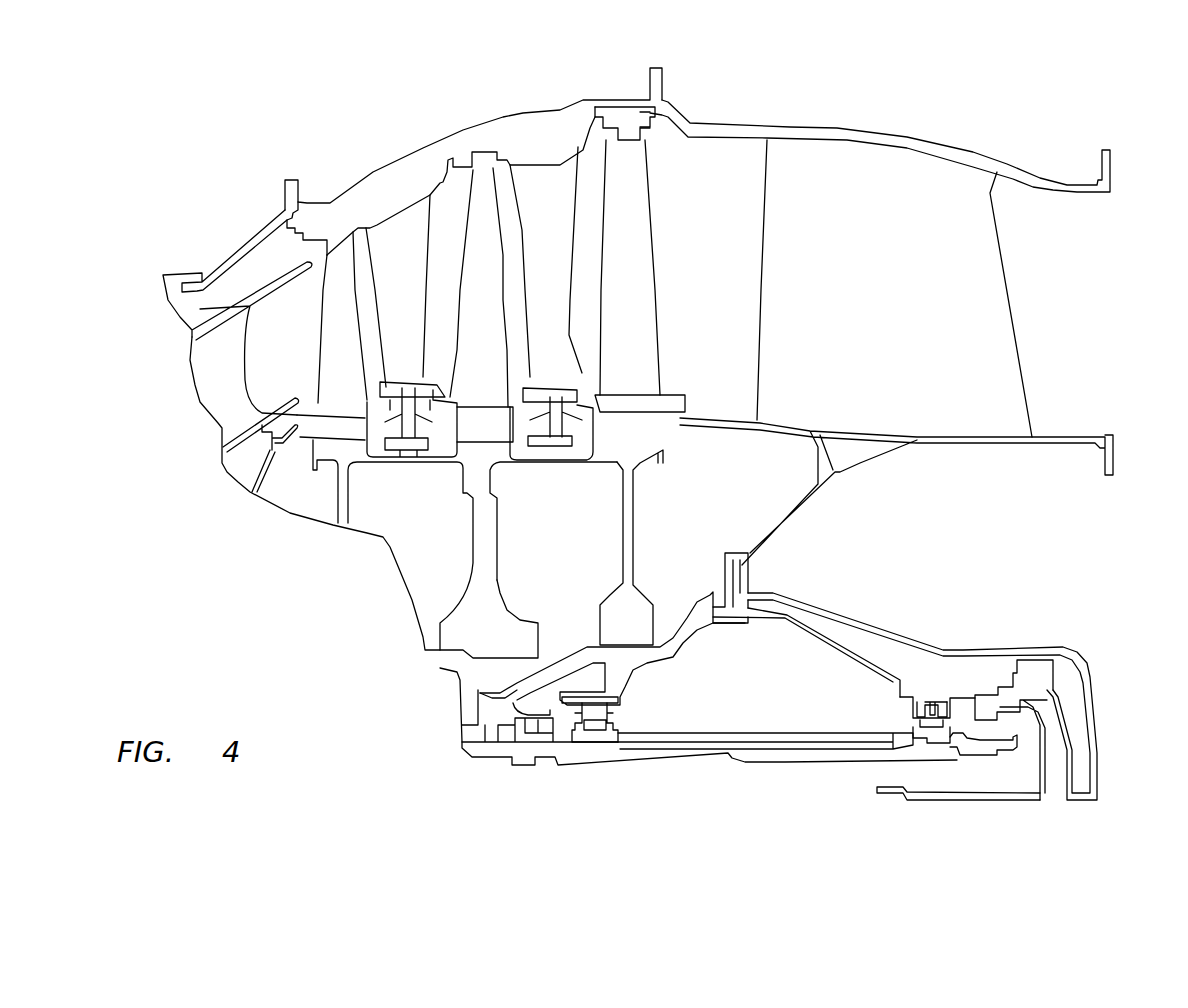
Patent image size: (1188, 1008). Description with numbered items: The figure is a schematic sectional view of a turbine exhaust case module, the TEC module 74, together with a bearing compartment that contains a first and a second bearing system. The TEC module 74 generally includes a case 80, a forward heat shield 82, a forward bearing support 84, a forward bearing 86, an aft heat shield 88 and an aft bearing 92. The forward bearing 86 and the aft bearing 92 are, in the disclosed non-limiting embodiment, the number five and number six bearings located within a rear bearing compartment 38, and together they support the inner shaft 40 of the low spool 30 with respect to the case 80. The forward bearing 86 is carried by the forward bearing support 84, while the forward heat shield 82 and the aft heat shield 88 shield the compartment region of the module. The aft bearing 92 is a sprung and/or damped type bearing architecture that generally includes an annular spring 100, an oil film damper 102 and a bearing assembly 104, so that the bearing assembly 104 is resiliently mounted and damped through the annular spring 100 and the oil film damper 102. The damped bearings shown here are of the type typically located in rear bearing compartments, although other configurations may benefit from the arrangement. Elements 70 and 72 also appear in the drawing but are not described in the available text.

The low spool 30 is at (480, 778).
The rear bearing compartment 38 is at (1107, 693).
The inner shaft 40 is at (763, 762).
The front flange 70 is at (212, 254).
The turbine casing 72 is at (537, 97).
The TEC module 74 is at (958, 140).
The case 80 is at (1000, 163).
The forward heat shield 82 is at (683, 612).
The forward bearing support 84 is at (673, 663).
The forward bearing 86 is at (599, 742).
The aft heat shield 88 is at (990, 648).
The aft bearing 92 is at (895, 713).
The annular spring 100 is at (917, 703).
The oil film damper 102 is at (933, 703).
The bearing assembly 104 is at (936, 767).